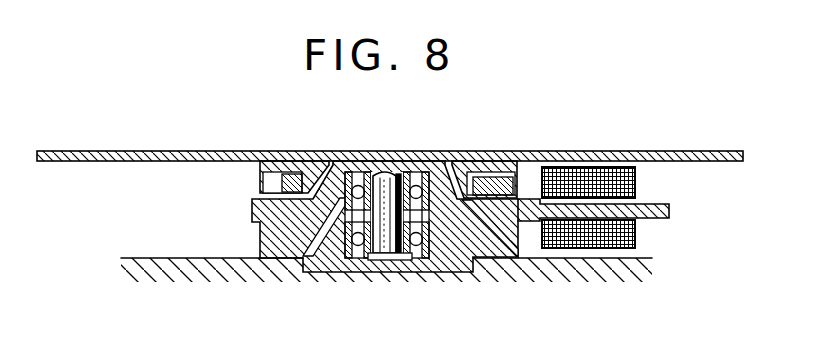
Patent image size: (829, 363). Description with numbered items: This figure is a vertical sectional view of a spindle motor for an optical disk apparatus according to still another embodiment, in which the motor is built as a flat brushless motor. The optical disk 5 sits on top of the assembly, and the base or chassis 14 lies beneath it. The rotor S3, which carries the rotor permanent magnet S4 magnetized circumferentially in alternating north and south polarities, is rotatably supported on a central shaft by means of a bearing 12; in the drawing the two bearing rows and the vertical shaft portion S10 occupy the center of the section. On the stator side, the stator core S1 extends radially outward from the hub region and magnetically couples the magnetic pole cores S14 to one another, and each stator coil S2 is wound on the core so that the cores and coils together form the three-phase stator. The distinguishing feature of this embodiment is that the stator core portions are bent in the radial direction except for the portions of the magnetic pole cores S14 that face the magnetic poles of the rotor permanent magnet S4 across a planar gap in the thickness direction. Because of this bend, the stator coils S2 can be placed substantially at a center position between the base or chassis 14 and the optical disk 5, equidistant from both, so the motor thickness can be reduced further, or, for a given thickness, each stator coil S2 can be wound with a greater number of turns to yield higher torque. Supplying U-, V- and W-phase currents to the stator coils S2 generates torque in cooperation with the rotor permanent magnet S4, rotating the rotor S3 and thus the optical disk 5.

The optical disk 5 is at (115, 150).
The base or chassis 14 is at (181, 260).
The rotor S3 is at (380, 152).
The rotor permanent magnet S4 is at (484, 176).
The stator coil S2 is at (584, 172).
The stator core S1 is at (667, 205).
The bearing 12 is at (358, 262).
The center shaft S10 is at (388, 267).
The magnetic pole core S14 is at (496, 214).